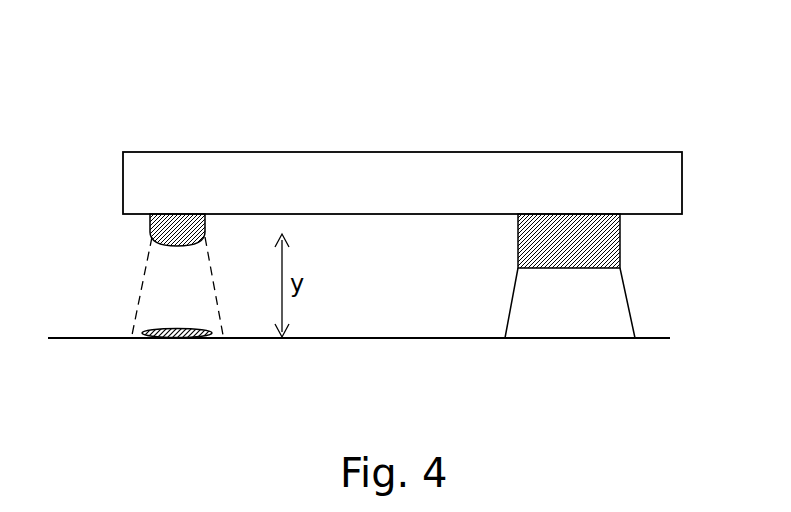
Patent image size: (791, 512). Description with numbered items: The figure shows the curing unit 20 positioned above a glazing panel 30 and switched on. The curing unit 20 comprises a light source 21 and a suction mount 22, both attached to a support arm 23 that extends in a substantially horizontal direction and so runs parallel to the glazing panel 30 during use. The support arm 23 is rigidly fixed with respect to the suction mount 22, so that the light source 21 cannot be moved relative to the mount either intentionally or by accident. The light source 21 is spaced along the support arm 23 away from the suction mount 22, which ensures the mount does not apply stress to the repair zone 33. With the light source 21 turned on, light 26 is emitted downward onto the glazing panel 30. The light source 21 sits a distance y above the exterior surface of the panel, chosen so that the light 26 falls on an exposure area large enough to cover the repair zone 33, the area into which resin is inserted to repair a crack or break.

The curing unit 20 is at (193, 95).
The light source 21 is at (150, 220).
The suction mount 22 is at (580, 302).
The support arm 23 is at (393, 151).
The light 26 is at (148, 295).
The glazing panel 30 is at (463, 339).
The repair zone 33 is at (177, 339).